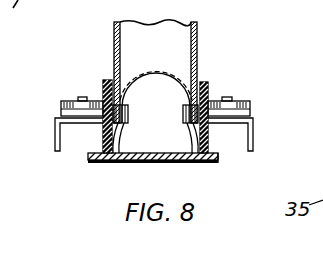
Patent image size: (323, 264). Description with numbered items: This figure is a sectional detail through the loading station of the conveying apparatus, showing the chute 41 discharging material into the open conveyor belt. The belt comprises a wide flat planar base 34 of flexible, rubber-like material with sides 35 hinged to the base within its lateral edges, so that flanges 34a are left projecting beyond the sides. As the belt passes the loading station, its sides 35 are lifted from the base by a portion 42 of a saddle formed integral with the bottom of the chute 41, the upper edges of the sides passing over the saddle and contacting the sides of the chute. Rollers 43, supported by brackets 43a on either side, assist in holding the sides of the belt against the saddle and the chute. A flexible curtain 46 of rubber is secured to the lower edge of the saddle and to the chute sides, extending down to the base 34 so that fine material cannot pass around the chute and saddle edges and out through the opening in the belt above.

The chute 41 is at (120, 44).
The portion of saddle 42 is at (172, 70).
The roller 43 is at (62, 104).
The bracket 43a is at (55, 142).
The side 35 is at (103, 137).
The curtain 46 is at (128, 120).
The base 34 is at (170, 162).
The flange 34a is at (220, 160).